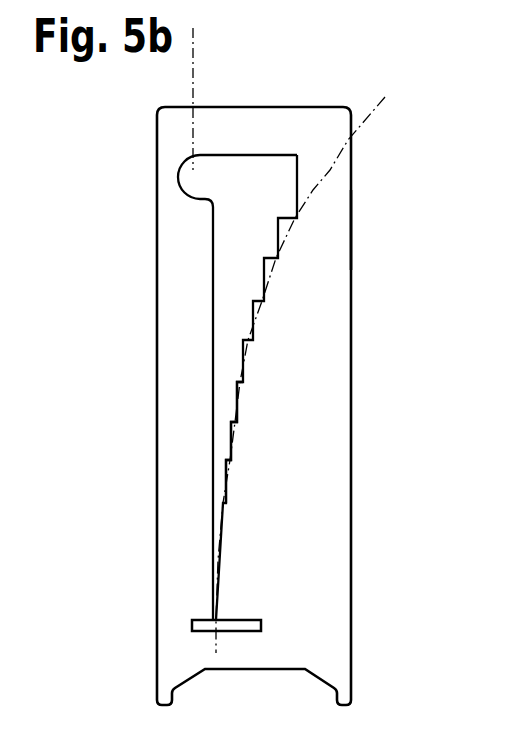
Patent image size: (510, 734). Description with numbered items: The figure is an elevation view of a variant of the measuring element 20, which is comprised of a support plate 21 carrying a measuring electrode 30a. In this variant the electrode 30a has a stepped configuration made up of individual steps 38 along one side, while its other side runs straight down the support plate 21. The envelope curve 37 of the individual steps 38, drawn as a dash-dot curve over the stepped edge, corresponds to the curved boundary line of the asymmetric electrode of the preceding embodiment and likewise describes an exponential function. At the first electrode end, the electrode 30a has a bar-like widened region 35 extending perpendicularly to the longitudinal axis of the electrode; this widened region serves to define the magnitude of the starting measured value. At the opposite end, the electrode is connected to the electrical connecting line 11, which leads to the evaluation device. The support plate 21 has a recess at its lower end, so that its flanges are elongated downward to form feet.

The electrical connecting line 11 is at (193, 82).
The measuring element 20 is at (298, 97).
The support plate 21 is at (328, 235).
The envelope curve 37 is at (328, 172).
The electrode 30a is at (242, 280).
The steps 38 is at (231, 460).
The bar-like widened region 35 is at (243, 623).